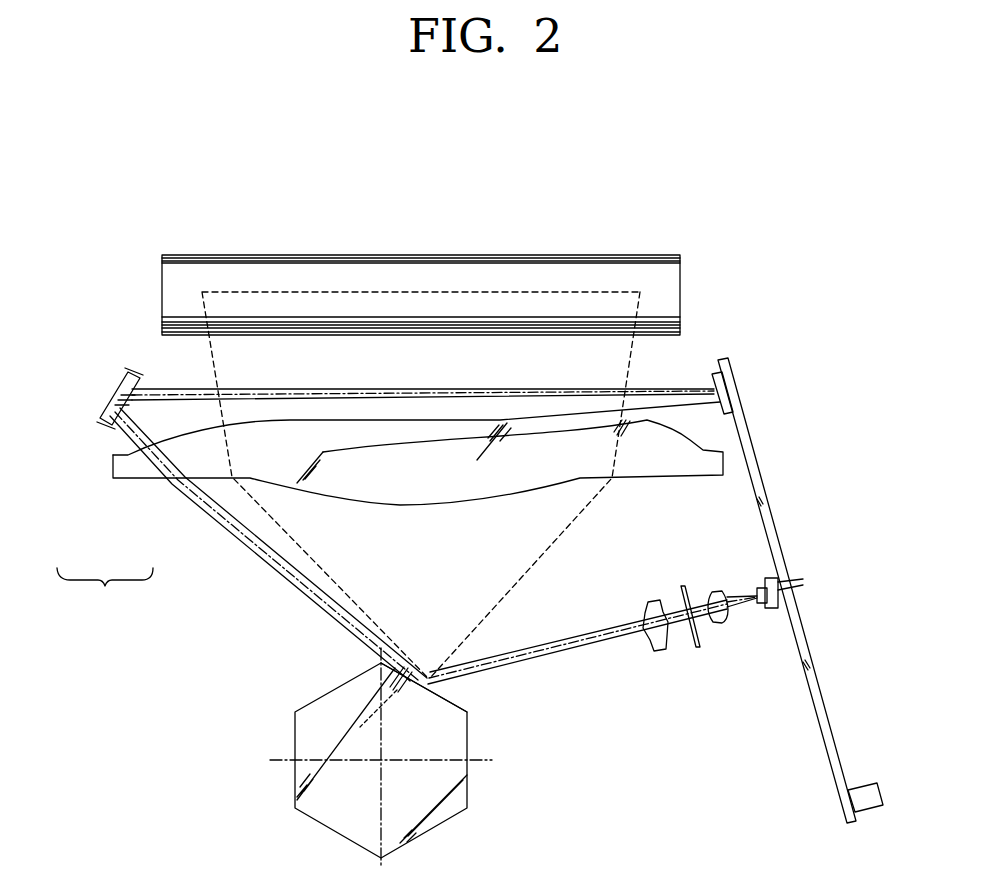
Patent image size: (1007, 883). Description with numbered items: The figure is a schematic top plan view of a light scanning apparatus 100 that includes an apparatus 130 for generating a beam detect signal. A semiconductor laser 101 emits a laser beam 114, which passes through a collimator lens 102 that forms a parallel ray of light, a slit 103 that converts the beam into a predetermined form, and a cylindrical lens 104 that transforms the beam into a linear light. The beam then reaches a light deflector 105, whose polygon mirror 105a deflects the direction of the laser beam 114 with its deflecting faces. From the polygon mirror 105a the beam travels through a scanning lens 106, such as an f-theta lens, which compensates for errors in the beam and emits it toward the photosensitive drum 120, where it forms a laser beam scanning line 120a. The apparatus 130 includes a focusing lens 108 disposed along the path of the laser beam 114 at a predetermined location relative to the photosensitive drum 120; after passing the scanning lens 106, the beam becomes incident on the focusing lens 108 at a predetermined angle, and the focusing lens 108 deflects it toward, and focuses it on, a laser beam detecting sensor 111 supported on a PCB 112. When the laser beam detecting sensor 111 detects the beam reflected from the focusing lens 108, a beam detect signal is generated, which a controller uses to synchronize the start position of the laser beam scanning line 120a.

The light scanning apparatus 100 is at (165, 223).
The photosensitive drum 120 is at (480, 265).
The laser beam scanning line 120a is at (557, 291).
The PCB 112 is at (774, 520).
The semiconductor laser 101 is at (763, 580).
The collimator lens 102 is at (709, 592).
The slit 103 is at (683, 586).
The cylindrical lens 104 is at (648, 604).
The laser beam 114 is at (583, 636).
The light deflector 105 is at (478, 798).
The polygon mirror 105a is at (458, 703).
The scanning lens 106 is at (436, 500).
The focusing lens 108 is at (108, 420).
The laser beam detecting sensor 111 is at (323, 452).
The apparatus to generate a beam detect signal 130 is at (105, 589).